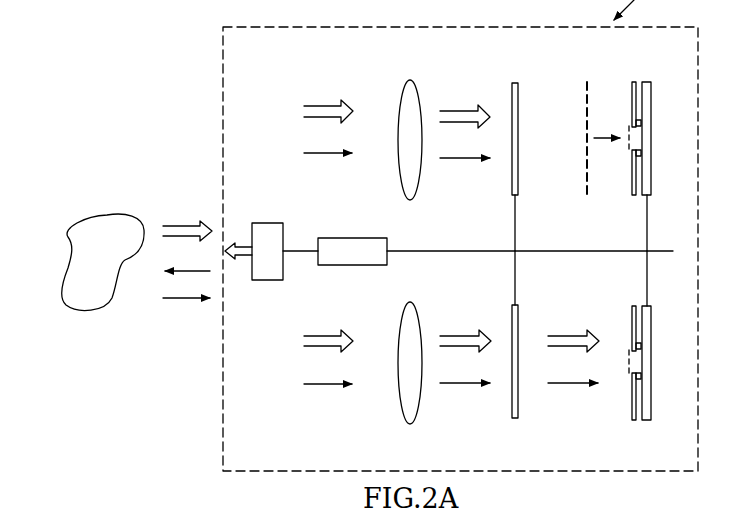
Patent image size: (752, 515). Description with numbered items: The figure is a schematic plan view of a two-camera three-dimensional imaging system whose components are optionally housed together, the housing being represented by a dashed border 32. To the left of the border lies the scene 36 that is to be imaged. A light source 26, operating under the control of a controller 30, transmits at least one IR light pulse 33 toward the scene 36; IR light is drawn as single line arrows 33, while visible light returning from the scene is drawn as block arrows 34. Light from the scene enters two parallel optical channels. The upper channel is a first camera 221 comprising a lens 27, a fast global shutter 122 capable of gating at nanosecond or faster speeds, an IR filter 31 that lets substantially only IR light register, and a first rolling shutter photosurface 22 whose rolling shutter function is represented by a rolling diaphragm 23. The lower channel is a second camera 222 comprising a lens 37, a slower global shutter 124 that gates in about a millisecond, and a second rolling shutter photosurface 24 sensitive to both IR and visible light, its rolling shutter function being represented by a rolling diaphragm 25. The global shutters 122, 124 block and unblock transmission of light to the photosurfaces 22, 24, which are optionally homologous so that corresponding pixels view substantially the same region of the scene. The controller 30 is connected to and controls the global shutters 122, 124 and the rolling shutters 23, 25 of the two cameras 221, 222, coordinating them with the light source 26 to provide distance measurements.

The dashed border 32 is at (273, 27).
The scene 36 is at (101, 188).
The block arrows 34 is at (190, 222).
The IR light pulse 33 is at (190, 268).
The first camera 221 is at (232, 118).
The second camera 222 is at (232, 388).
The light source 26 is at (270, 223).
The controller 30 is at (340, 238).
The lens 27 is at (420, 182).
The lens 37 is at (420, 406).
The global shutter 122 is at (518, 93).
The global shutter 124 is at (514, 410).
The IR filter 31 is at (587, 82).
The first rolling shutter photosurface 22 is at (651, 110).
The rolling diaphragm 23 is at (632, 180).
The second rolling shutter photosurface 24 is at (651, 336).
The rolling diaphragm 25 is at (632, 403).